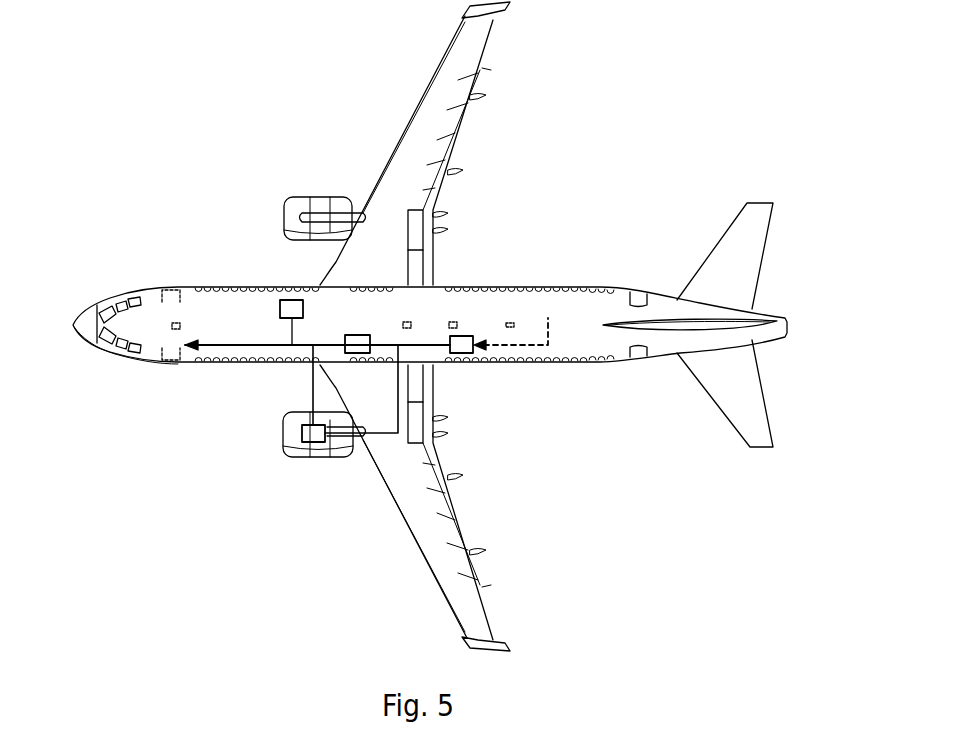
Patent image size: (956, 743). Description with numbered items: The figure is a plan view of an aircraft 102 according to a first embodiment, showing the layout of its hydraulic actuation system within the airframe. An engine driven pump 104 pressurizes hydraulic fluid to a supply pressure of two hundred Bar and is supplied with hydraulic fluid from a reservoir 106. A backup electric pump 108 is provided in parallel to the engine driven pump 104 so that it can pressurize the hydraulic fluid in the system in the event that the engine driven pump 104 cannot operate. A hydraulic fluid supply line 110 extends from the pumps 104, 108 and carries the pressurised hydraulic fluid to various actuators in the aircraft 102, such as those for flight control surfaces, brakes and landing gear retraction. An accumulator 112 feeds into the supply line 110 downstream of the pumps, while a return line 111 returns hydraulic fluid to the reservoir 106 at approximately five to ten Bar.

The aircraft 102 is at (695, 173).
The engine driven pump 104 is at (313, 442).
The reservoir 106 is at (466, 340).
The backup electric pump 108 is at (356, 335).
The hydraulic fluid supply line 110 is at (233, 345).
The return line 111 is at (520, 347).
The accumulator 112 is at (280, 307).